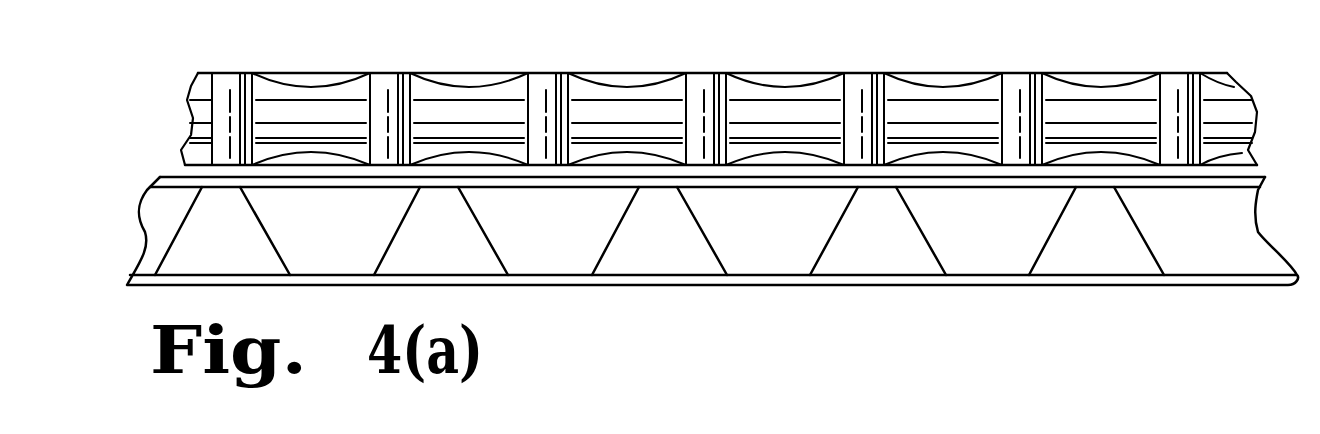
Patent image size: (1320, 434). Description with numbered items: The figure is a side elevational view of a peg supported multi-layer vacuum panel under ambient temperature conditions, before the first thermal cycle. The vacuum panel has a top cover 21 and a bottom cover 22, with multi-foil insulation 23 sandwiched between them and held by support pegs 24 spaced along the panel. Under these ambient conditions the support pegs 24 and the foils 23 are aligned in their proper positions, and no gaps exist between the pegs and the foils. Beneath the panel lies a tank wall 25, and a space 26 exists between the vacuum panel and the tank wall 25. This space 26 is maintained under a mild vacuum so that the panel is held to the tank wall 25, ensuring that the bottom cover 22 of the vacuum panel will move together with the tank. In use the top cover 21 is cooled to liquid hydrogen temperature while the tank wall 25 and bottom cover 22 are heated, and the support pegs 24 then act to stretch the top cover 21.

The top cover 21 is at (719, 89).
The bottom cover 22 is at (712, 261).
The multi-foil insulation 23 is at (1107, 112).
The support pegs 24 is at (702, 105).
The tank wall 25 is at (1027, 188).
The space 26 is at (925, 180).